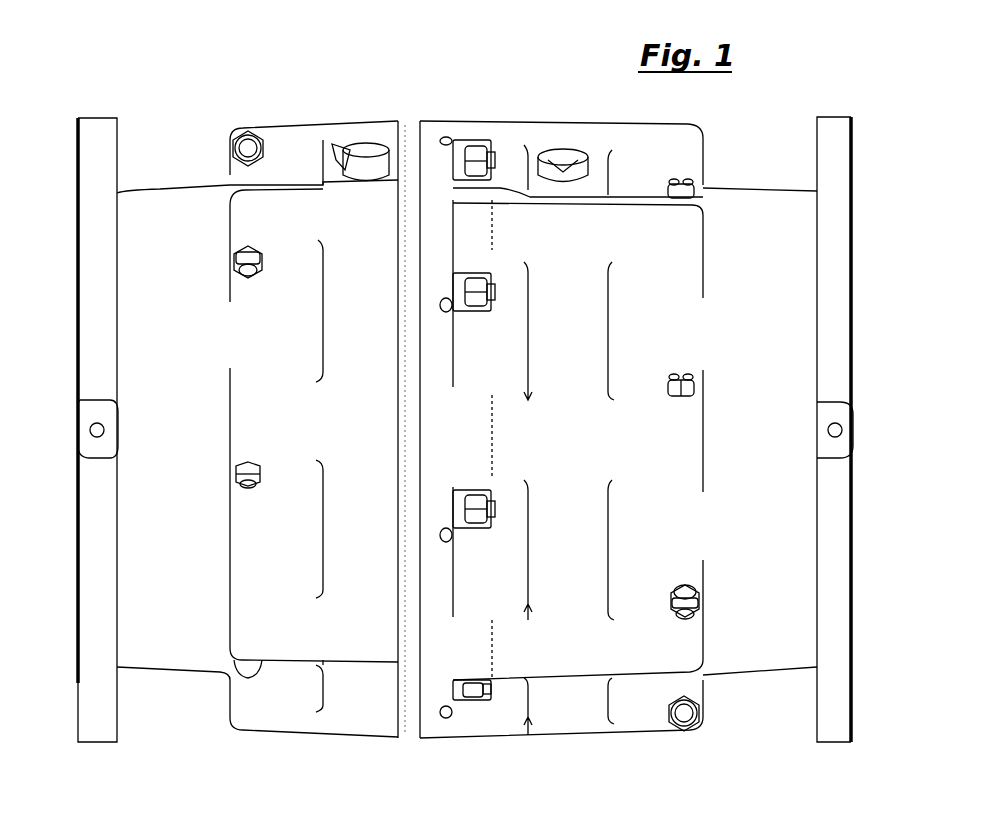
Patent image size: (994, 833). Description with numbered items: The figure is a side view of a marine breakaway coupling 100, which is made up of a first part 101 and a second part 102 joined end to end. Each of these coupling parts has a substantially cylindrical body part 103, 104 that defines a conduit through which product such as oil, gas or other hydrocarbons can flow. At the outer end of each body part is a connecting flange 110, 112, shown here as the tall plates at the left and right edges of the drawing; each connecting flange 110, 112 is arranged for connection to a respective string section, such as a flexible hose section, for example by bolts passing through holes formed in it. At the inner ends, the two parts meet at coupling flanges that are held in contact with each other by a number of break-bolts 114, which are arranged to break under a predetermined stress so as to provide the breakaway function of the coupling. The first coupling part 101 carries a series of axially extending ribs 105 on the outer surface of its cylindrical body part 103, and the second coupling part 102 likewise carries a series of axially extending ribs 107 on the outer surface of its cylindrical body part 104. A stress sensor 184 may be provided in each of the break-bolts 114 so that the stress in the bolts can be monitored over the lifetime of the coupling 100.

The marine breakaway coupling 100 is at (466, 429).
The first part 101 is at (322, 126).
The second part 102 is at (523, 122).
The cylindrical body part 103 is at (187, 190).
The cylindrical body part 104 is at (581, 832).
The axially extending ribs 105 is at (748, 187).
The axially extending ribs 107 is at (527, 832).
The connecting flange 110 is at (110, 732).
The connecting flange 112 is at (838, 723).
The break-bolts 114 is at (496, 147).
The stress sensor 184 is at (447, 832).